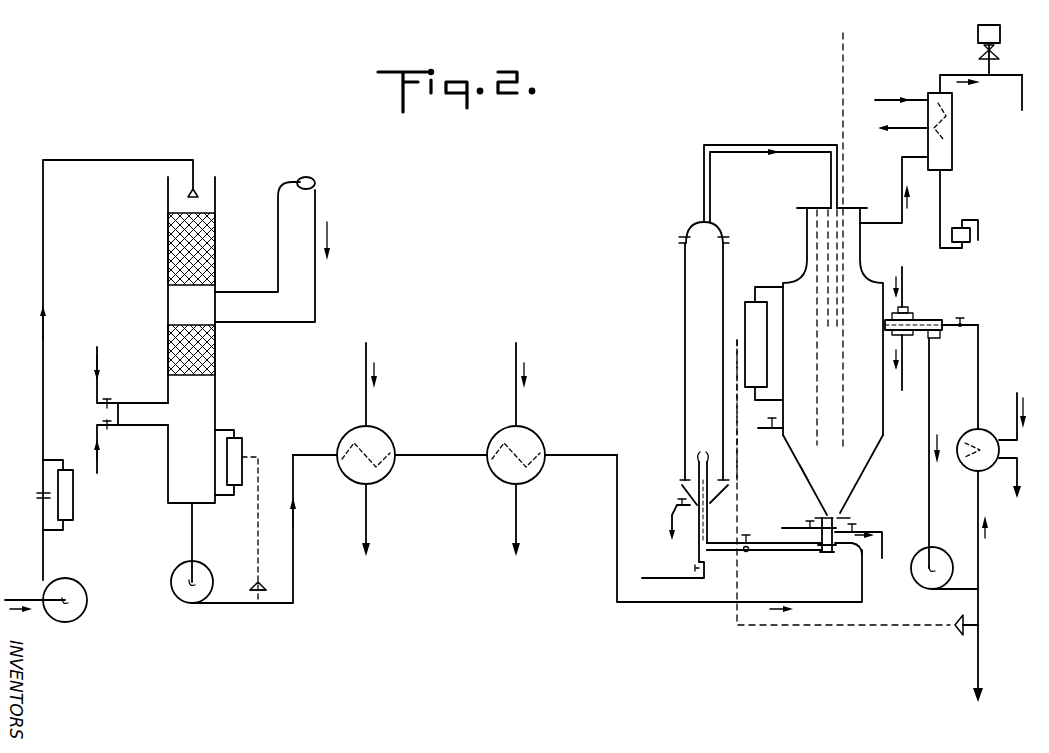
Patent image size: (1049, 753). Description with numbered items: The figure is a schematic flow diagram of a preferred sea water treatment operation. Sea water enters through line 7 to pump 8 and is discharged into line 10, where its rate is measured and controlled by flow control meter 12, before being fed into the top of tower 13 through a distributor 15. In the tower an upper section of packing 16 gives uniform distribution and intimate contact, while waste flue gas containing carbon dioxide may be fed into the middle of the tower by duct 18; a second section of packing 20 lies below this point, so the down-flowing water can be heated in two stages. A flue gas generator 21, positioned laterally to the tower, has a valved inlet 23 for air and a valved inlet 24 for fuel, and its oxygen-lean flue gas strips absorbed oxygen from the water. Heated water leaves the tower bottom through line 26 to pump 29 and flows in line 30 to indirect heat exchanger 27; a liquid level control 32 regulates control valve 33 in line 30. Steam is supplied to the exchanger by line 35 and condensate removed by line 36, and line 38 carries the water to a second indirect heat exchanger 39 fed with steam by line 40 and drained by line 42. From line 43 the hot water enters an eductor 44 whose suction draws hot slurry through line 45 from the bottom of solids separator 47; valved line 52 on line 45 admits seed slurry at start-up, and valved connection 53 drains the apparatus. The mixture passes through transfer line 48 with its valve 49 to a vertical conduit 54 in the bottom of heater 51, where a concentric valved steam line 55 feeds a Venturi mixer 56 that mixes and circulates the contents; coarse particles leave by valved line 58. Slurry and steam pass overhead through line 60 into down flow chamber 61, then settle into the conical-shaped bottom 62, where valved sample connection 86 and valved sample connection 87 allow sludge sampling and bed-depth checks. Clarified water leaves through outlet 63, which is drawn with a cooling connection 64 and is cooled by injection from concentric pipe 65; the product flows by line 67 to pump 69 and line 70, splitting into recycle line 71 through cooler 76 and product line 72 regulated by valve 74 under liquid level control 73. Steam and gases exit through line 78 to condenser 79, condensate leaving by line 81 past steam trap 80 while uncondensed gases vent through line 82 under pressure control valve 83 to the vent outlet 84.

The line 7 is at (38, 605).
The pump 8 is at (84, 592).
The line 10 is at (43, 392).
The flow control meter 12 is at (73, 502).
The tower 13 is at (215, 256).
The distributor 15 is at (198, 192).
The section of packing 16 is at (168, 242).
The duct 18 is at (318, 212).
The section of packing 20 is at (168, 337).
The flue gas generator 21 is at (150, 405).
The valved inlet 23 is at (97, 372).
The valved inlet 24 is at (97, 449).
The line 26 is at (192, 528).
The indirect heat exchanger 27 is at (345, 474).
The pump 29 is at (178, 598).
The line 30 is at (282, 605).
The liquid level control 32 is at (242, 440).
The control valve 33 is at (250, 595).
The line 35 is at (366, 401).
The line 36 is at (366, 533).
The line 38 is at (437, 456).
The second indirect heat exchanger 39 is at (497, 475).
The line 40 is at (516, 401).
The line 42 is at (516, 530).
The line 43 is at (617, 508).
The eductor 44 is at (830, 554).
The line 45 is at (868, 548).
The solids separator 47 is at (797, 262).
The transfer line 48 is at (764, 542).
The valve 49 is at (747, 533).
The heater 51 is at (685, 372).
The valved line 52 is at (806, 526).
The valved connection 53 is at (870, 526).
The vertical conduit 54 is at (699, 548).
The valved steam line 55 is at (693, 578).
The Venturi mixer 56 is at (695, 468).
The valved line 58 is at (672, 513).
The line 60 is at (704, 166).
The down flow chamber 61 is at (843, 305).
The conical-shaped bottom 62 is at (872, 458).
The outlet 63 is at (935, 318).
The coolant inlet pipe 64 is at (906, 306).
The concentric pipe 65 is at (954, 327).
The line 67 is at (929, 420).
The pump 69 is at (940, 553).
The line 70 is at (962, 588).
The line 71 is at (980, 566).
The line 72 is at (980, 650).
The liquid level control 73 is at (745, 300).
The regulating valve 74 is at (962, 637).
The cooler 76 is at (985, 432).
The line 78 is at (902, 192).
The condenser 79 is at (952, 154).
The steam trap 80 is at (974, 237).
The line 81 is at (948, 196).
The line 82 is at (950, 76).
The pressure control valve 83 is at (997, 63).
The vent outlet 84 is at (1022, 112).
The valved sample connection 86 is at (792, 483).
The valved sample connection 87 is at (764, 430).